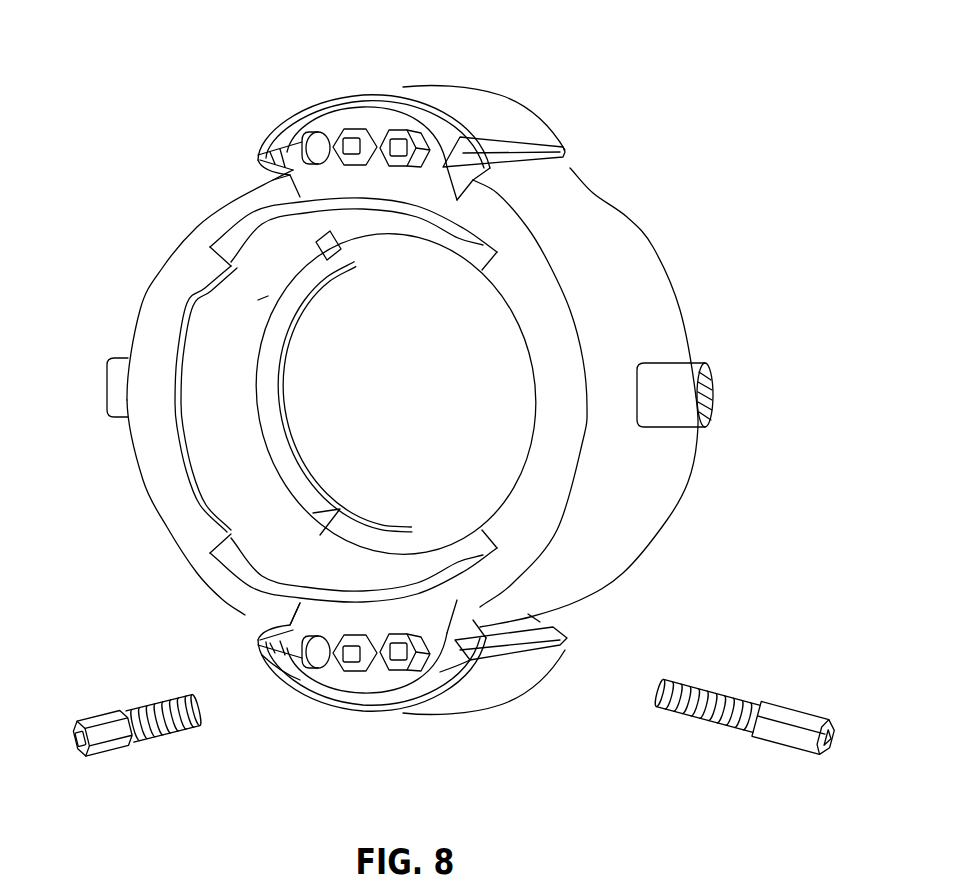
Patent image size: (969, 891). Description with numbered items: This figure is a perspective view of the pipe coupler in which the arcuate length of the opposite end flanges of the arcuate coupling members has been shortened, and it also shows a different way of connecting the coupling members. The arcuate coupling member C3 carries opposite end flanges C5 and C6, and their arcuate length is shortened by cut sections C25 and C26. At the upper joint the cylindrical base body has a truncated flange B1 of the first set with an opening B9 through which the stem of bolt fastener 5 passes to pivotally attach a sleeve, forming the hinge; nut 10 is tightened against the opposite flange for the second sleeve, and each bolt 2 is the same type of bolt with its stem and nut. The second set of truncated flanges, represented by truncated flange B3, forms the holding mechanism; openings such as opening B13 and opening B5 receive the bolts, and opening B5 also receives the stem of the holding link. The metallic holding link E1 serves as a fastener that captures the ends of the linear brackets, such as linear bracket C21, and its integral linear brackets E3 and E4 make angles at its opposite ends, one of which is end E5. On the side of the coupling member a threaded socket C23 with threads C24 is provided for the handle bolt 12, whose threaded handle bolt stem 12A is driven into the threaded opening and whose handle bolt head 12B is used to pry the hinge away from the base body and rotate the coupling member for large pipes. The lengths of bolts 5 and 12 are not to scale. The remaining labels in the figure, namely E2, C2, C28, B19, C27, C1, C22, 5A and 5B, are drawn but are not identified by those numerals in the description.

The truncated flange B1 is at (348, 384).
The opening B9 is at (312, 137).
The end tab E2 is at (258, 156).
The bolt 2 is at (330, 147).
The metallic holding link E1 is at (485, 107).
The integral linear bracket E3 is at (488, 152).
The upper clamp half C2 is at (627, 213).
The integral linear bracket E4 is at (240, 182).
The key tab C28 is at (341, 246).
The nut 10 is at (390, 168).
The end of holding link E5 is at (463, 162).
The cut section C26 is at (225, 260).
The inner collar face B19 is at (265, 255).
The cut section C25 is at (455, 220).
The end flange C6 is at (292, 383).
The arcuate coupling member C3 is at (630, 318).
The end flange C5 is at (190, 343).
The threaded socket C23 is at (112, 400).
The step C27 is at (338, 512).
The threads C24 is at (713, 407).
The lower clamp half C1 is at (560, 532).
The bolt fastener 5 is at (137, 731).
The handle bolt 12 is at (745, 719).
The lower lug left portion C22 is at (287, 637).
The linear bracket C21 is at (463, 655).
The threaded shaft 5A is at (167, 728).
The opening B13 is at (313, 660).
The truncated flange B3 is at (371, 704).
The opening B5 is at (404, 672).
The socket 5B is at (95, 745).
The threaded handle bolt stem 12A is at (750, 727).
The handle bolt head 12B is at (823, 757).